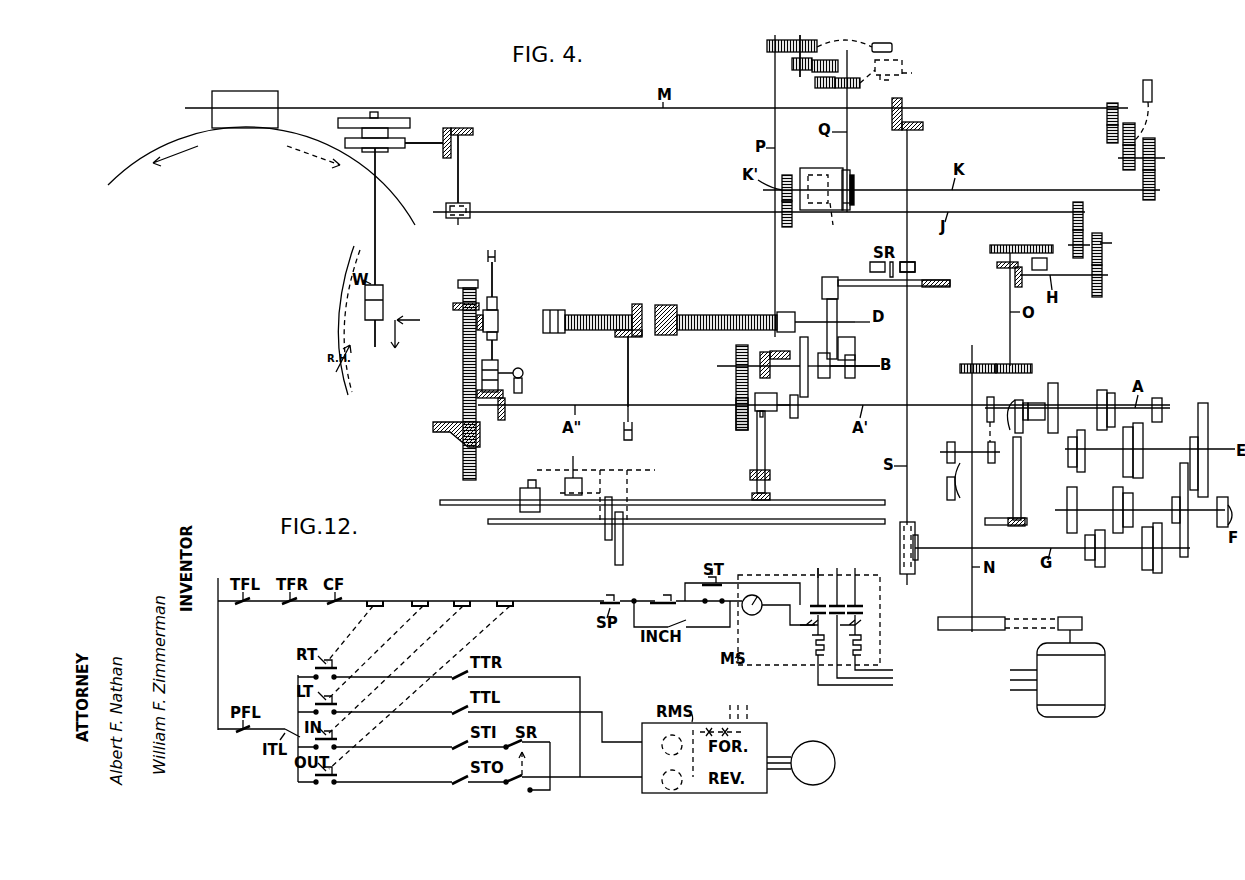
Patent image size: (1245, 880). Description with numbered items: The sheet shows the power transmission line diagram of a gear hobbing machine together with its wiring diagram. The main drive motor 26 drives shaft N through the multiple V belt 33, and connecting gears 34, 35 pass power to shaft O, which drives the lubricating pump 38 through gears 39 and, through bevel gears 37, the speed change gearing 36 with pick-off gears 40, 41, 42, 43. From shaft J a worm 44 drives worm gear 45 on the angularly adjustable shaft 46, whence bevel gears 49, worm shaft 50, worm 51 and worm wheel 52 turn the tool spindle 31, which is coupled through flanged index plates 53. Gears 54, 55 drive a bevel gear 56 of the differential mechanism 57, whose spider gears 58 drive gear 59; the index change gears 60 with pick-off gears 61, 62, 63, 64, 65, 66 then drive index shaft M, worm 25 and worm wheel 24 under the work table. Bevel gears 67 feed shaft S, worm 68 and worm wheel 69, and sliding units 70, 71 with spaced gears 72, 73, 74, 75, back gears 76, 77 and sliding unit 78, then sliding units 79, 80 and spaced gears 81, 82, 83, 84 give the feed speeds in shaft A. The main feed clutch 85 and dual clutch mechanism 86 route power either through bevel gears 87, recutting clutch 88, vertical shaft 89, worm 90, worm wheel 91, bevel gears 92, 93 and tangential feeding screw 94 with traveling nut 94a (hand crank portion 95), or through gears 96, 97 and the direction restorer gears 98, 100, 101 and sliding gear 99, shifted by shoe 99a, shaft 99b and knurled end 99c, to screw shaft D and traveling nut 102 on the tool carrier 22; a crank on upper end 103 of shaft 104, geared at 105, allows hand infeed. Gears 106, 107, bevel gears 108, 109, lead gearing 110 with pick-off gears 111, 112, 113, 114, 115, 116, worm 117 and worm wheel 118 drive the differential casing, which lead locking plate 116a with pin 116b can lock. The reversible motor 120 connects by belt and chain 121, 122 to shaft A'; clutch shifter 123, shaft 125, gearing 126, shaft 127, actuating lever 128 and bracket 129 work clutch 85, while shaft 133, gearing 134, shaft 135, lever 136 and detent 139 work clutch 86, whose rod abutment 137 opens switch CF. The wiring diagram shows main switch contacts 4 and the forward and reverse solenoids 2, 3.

In FIG. 4, the tool carrier 22 is at (655, 306).
In FIG. 4, the worm wheel 24 is at (152, 158).
In FIG. 4, the worm 25 is at (236, 91).
In FIG. 4, the main drive motor 26 is at (1057, 673).
In FIG. 4, the tool spindle 31 is at (375, 250).
In FIG. 4, the multiple V belt 33 is at (1028, 617).
In FIG. 4, the connecting gear 34 is at (990, 364).
In FIG. 4, the connecting gear 35 is at (1011, 364).
In FIG. 4, the speed change gearing 36 is at (1150, 263).
In FIG. 4, the bevel gears 37 is at (1003, 268).
In FIG. 4, the lubricating pump 38 is at (1047, 266).
In FIG. 4, the gears 39 is at (1028, 248).
In FIG. 4, the pick-off gear 40 is at (1102, 289).
In FIG. 4, the pick-off gear 41 is at (1104, 243).
In FIG. 4, the pick-off gear 42 is at (1085, 230).
In FIG. 4, the pick-off gear 43 is at (1073, 210).
In FIG. 4, the worm 44 is at (470, 220).
In FIG. 4, the worm gear 45 is at (468, 208).
In FIG. 4, the angularly adjustable shaft 46 is at (460, 168).
In FIG. 4, the bevel gears 49 is at (447, 128).
In FIG. 4, the worm shaft 50 is at (425, 143).
In FIG. 4, the worm 51 is at (392, 148).
In FIG. 4, the worm wheel 52 is at (345, 140).
In FIG. 4, the flanged index plates 53 is at (372, 118).
In FIG. 4, the gear 54 is at (785, 221).
In FIG. 4, the gear 55 is at (784, 191).
In FIG. 4, the bevel gear 56 is at (808, 178).
In FIG. 4, the differential mechanism 57 is at (850, 203).
In FIG. 4, the spider gears 58 is at (818, 175).
In FIG. 4, the gear 59 is at (840, 225).
In FIG. 4, the index change gears 60 is at (1190, 133).
In FIG. 4, the pick-off gear 61 is at (1155, 198).
In FIG. 4, the pick-off gear 62 is at (1155, 177).
In FIG. 4, the pick-off gear 63 is at (1123, 170).
In FIG. 4, the pick-off gear 64 is at (1122, 146).
In FIG. 4, the pick-off gear 65 is at (1107, 131).
In FIG. 4, the pick-off gear 66 is at (1107, 109).
In FIG. 4, the bevel gears 67 is at (905, 118).
In FIG. 4, the worm 68 is at (918, 540).
In FIG. 4, the worm wheel 69 is at (915, 570).
In FIG. 4, the double-gear sliding unit 70 is at (1099, 567).
In FIG. 4, the double-gear sliding unit 71 is at (1150, 573).
In FIG. 4, the spaced gear 72 is at (1077, 501).
In FIG. 4, the spaced gear 73 is at (1116, 497).
In FIG. 4, the spaced gear 74 is at (1133, 501).
In FIG. 4, the spaced gear 75 is at (1175, 500).
In FIG. 4, the back gear 76 is at (1188, 551).
In FIG. 4, the back gear 77 is at (1218, 526).
In FIG. 4, the sliding unit 78 is at (1208, 393).
In FIG. 4, the double-gear sliding unit 79 is at (1143, 467).
In FIG. 4, the double-gear sliding unit 80 is at (1068, 463).
In FIG. 4, the spaced gear 81 is at (1162, 386).
In FIG. 4, the spaced gear 82 is at (1112, 393).
In FIG. 4, the spaced gear 83 is at (1102, 390).
In FIG. 4, the spaced gear 84 is at (1055, 390).
In FIG. 4, the main feed clutch 85 is at (1036, 422).
In FIG. 4, the dual clutch mechanism 86 is at (778, 418).
In FIG. 4, the bevel gears 87 is at (505, 397).
In FIG. 4, the recutting clutch 88 is at (523, 374).
In FIG. 4, the vertical shaft 89 is at (494, 352).
In FIG. 4, the worm 90 is at (498, 320).
In FIG. 4, the worm wheel 91 is at (497, 303).
In FIG. 4, the bevel gear 92 is at (477, 325).
In FIG. 4, the bevel gear 93 is at (457, 310).
In FIG. 4, the tangential feeding screw 94 is at (463, 375).
In FIG. 4, the traveling nut 94a is at (462, 441).
In FIG. 4, the crank receiving portion 95 is at (495, 255).
In FIG. 4, the gear 96 is at (798, 421).
In FIG. 4, the gear 97 is at (808, 392).
In FIG. 4, the gear 98 is at (822, 388).
In FIG. 4, the sliding gear 99 is at (827, 298).
In FIG. 4, the gear straddling shoe 99a is at (824, 286).
In FIG. 4, the axially shiftable shaft 99b is at (924, 287).
In FIG. 4, the knurled outer end 99c is at (946, 280).
In FIG. 4, the gear 100 is at (856, 380).
In FIG. 4, the gear 101 is at (856, 346).
In FIG. 4, the traveling nut 102 is at (676, 335).
In FIG. 4, the upper end 103 is at (632, 435).
In FIG. 4, the shaft 104 is at (628, 383).
In FIG. 4, the gearing 105 is at (640, 337).
In FIG. 4, the gear 106 is at (736, 430).
In FIG. 4, the gear 107 is at (736, 384).
In FIG. 4, the bevel gear 108 is at (765, 378).
In FIG. 4, the bevel gear 109 is at (772, 352).
In FIG. 4, the changeable lead gearing 110 is at (838, 31).
In FIG. 4, the pick-off gear 111 is at (767, 46).
In FIG. 4, the pick-off gear 112 is at (790, 52).
In FIG. 4, the pick-off gear 113 is at (795, 66).
In FIG. 4, the pick-off gear 114 is at (818, 72).
In FIG. 4, the pick-off gear 115 is at (822, 88).
In FIG. 4, the pick-off gear 116 is at (860, 86).
In FIG. 4, the lead locking plate 116a is at (902, 66).
In FIG. 4, the pin 116b is at (912, 74).
In FIG. 4, the worm 117 is at (854, 187).
In FIG. 4, the worm wheel 118 is at (846, 172).
In FIG. 4, the reversible motor 120 is at (953, 509).
In FIG. 12, the reversible motor 120 is at (801, 763).
In FIG. 4, the belt connection 121 is at (947, 469).
In FIG. 4, the chain connection 122 is at (988, 429).
In FIG. 4, the clutch shifter 123 is at (1022, 400).
In FIG. 4, the shaft 125 is at (1013, 488).
In FIG. 4, the gearing 126 is at (1022, 518).
In FIG. 4, the shaft 127 is at (1005, 526).
In FIG. 4, the actuating lever 128 is at (623, 546).
In FIG. 4, the bracket 129 is at (622, 490).
In FIG. 4, the shaft 133 is at (757, 461).
In FIG. 4, the gearing 134 is at (752, 496).
In FIG. 4, the shaft 135 is at (720, 524).
In FIG. 4, the lever 136 is at (605, 536).
In FIG. 4, the abutment 137 is at (530, 490).
In FIG. 4, the spring actuated detent means 139 is at (770, 480).
In FIG. 12, the forward solenoid 2 is at (665, 741).
In FIG. 12, the reverse solenoid 3 is at (665, 775).
In FIG. 12, the main switch contacts 4 is at (827, 587).